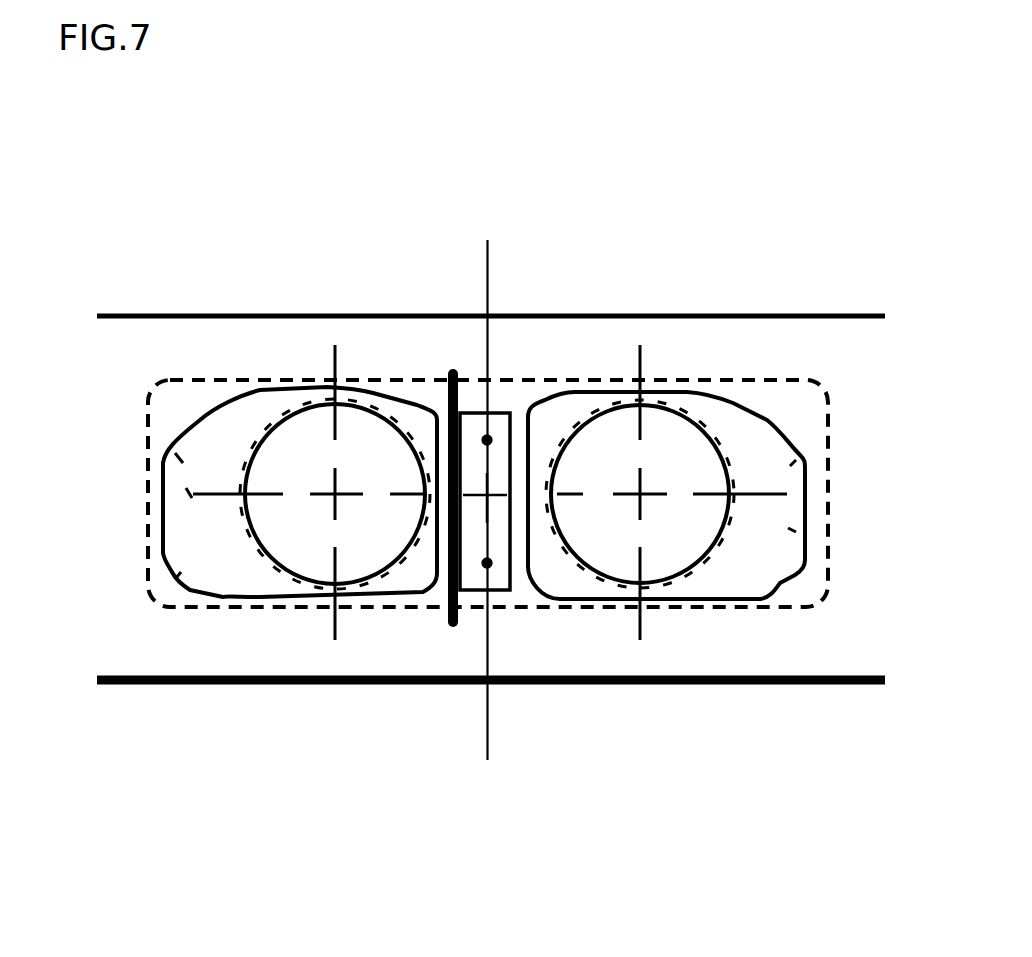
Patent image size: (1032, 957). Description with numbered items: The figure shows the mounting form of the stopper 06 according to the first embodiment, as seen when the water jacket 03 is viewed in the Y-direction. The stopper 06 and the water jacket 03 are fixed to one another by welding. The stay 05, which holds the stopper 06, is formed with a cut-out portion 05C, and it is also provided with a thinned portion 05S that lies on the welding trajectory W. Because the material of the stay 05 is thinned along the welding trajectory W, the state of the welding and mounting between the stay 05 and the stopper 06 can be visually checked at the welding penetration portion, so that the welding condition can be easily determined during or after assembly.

The water jacket 03 is at (185, 313).
The stay 05 is at (748, 378).
The thinned portion 05S is at (165, 494).
The cut-out portion 05C is at (525, 588).
The stopper 06 is at (497, 408).
The welding trajectory W is at (208, 593).